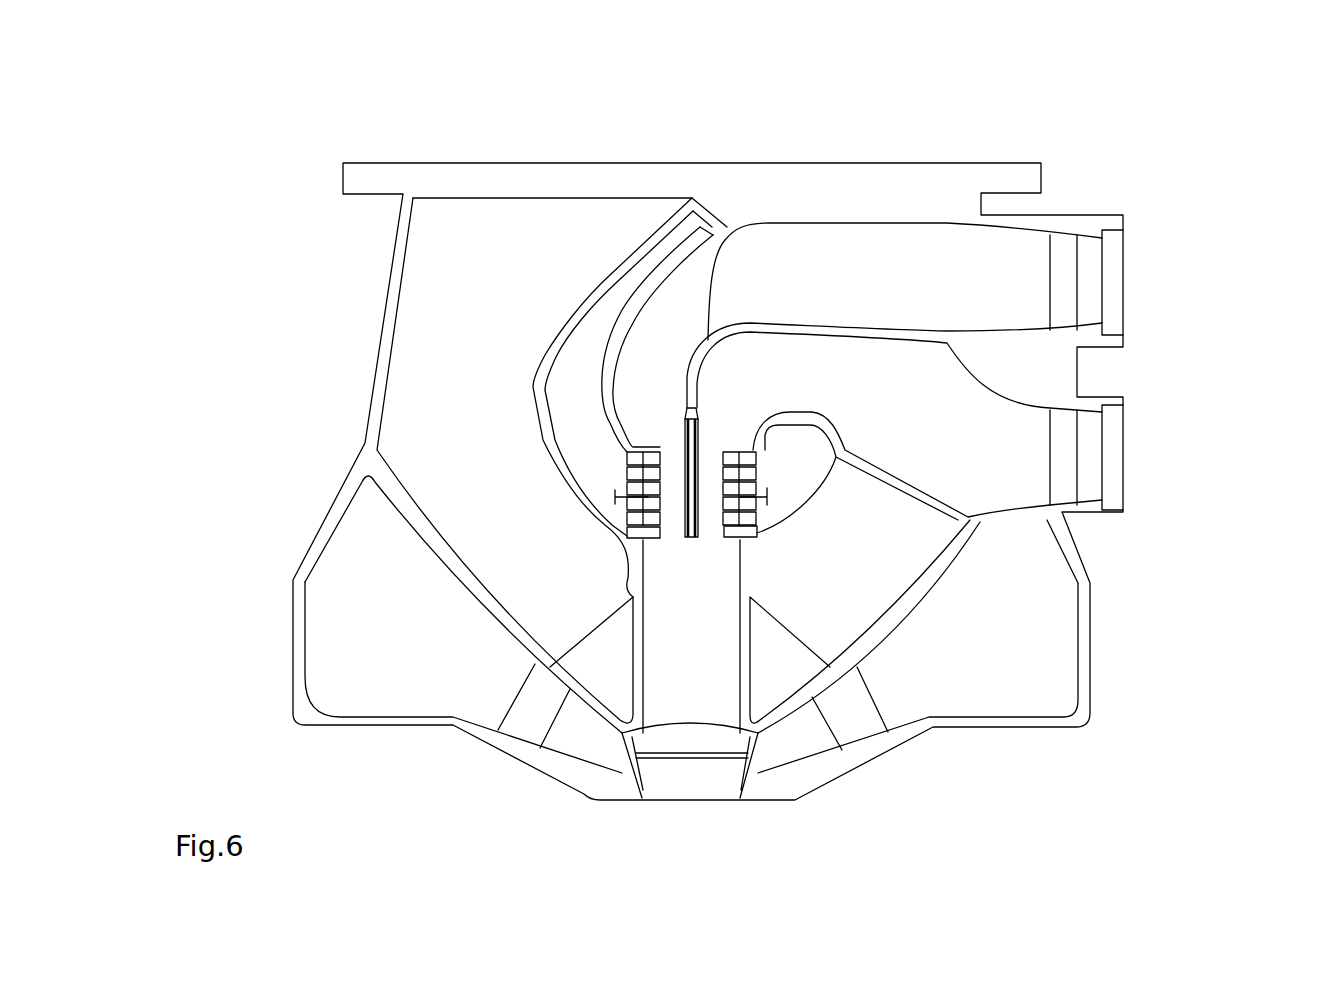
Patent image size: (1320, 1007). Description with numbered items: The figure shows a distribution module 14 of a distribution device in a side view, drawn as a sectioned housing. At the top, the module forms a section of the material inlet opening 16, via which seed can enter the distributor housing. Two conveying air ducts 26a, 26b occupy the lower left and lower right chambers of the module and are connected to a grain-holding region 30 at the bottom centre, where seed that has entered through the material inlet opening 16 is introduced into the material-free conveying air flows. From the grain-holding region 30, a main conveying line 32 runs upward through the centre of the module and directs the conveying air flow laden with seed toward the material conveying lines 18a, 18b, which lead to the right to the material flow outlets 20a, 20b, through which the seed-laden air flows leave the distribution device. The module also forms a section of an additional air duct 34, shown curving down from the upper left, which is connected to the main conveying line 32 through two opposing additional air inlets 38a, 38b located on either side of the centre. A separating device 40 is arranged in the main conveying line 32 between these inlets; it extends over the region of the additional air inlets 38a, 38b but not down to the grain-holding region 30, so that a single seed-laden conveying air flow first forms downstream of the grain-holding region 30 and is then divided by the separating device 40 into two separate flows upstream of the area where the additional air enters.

The distribution module 14 is at (380, 333).
The material inlet opening 16 is at (670, 150).
The material conveying line 18a is at (1005, 488).
The material conveying line 18b is at (997, 253).
The material flow outlet 20a is at (1143, 462).
The material flow outlet 20b is at (1143, 282).
The conveying air duct 26a is at (330, 640).
The conveying air duct 26b is at (998, 688).
The grain-holding region 30 is at (692, 740).
The main conveying line 32 is at (660, 692).
The additional air duct 34 is at (578, 357).
The additional air inlet 38a is at (600, 474).
The additional air inlet 38b is at (772, 471).
The separating device 40 is at (708, 332).